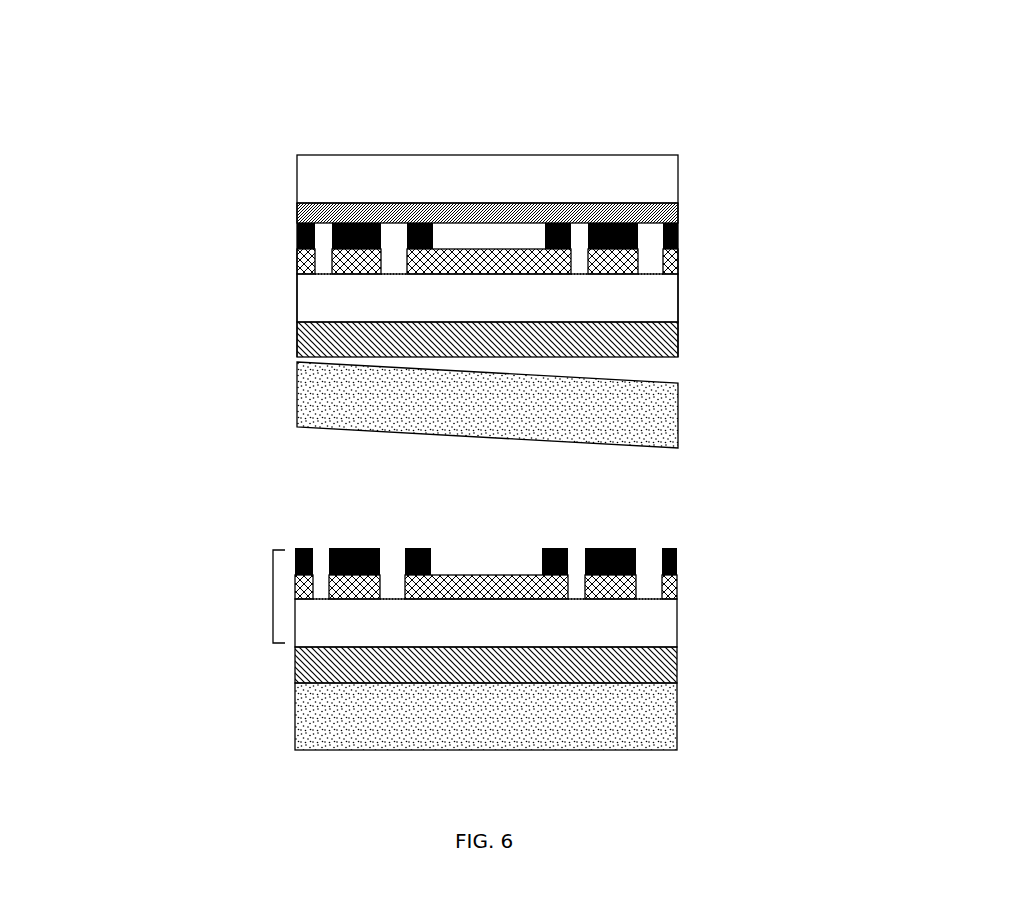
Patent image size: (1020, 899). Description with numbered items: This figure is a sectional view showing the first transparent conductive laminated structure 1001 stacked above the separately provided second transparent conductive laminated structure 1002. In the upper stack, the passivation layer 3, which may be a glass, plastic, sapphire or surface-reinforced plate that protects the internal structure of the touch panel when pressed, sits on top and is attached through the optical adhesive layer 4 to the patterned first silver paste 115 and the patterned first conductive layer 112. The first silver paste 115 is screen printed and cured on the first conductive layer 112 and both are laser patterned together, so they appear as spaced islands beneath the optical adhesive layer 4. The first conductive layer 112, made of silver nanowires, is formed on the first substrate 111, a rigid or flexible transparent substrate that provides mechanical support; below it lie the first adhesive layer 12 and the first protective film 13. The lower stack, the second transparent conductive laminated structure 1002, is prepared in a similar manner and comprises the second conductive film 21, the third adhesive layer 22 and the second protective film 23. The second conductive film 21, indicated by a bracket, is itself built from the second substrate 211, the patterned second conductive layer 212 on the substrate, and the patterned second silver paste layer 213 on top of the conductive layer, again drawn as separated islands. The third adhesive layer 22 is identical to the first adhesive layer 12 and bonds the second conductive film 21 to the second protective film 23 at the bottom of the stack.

The first transparent conductive laminated structure 1001 is at (633, 140).
The passivation layer 3 is at (676, 177).
The optical adhesive layer 4 is at (677, 211).
The first silver paste 115 is at (677, 232).
The first conductive layer 112 is at (676, 260).
The first substrate 111 is at (676, 301).
The first adhesive layer 12 is at (676, 340).
The first protective film 13 is at (676, 391).
The second transparent conductive laminated structure 1002 is at (659, 521).
The second conductive film 21 is at (273, 597).
The patterned second silver paste layer 213 is at (358, 550).
The patterned second conductive layer 212 is at (677, 580).
The second substrate 211 is at (674, 626).
The third adhesive layer 22 is at (676, 666).
The second protective film 23 is at (676, 715).